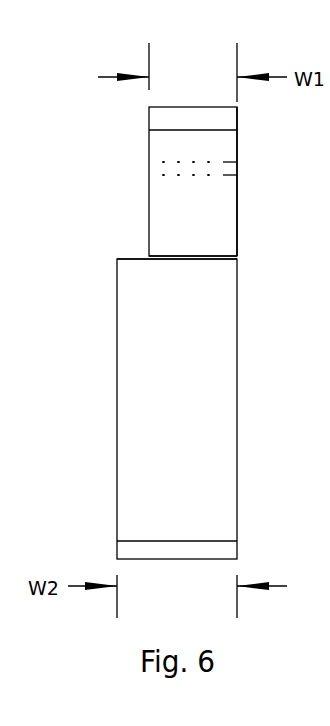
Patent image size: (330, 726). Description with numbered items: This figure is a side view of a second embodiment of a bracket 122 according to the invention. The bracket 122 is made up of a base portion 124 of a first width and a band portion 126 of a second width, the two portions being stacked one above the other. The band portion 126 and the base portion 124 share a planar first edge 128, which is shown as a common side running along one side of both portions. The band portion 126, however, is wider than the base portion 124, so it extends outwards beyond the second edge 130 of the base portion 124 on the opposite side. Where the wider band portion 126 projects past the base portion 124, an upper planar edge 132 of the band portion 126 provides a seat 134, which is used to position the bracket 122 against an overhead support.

The bracket 122 is at (177, 297).
The base portion 124 is at (205, 215).
The band portion 126 is at (195, 402).
The planar first edge 128 is at (237, 221).
The second edge 130 is at (147, 168).
The upper planar edge 132 is at (123, 257).
The seat 134 is at (140, 251).